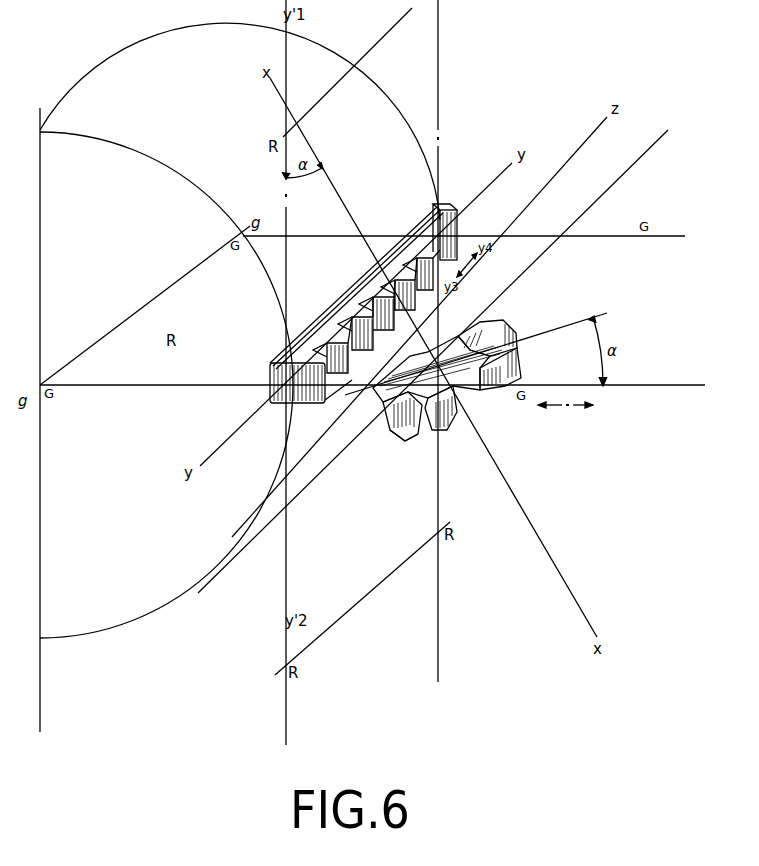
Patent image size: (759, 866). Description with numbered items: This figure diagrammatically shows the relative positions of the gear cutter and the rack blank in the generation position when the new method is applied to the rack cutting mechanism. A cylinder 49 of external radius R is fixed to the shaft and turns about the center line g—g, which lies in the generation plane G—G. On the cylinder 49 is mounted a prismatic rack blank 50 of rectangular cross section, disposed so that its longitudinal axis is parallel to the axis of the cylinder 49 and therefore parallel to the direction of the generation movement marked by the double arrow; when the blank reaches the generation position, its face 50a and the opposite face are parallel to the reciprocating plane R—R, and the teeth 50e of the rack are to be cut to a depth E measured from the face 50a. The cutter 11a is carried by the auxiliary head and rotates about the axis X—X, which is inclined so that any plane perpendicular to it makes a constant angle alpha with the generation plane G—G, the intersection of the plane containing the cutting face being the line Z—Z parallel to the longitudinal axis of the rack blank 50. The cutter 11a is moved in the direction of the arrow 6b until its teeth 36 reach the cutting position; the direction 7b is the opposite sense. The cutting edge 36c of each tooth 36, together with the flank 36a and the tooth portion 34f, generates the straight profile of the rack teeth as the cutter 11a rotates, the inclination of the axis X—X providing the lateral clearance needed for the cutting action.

The cylinder 49 is at (100, 100).
The rack blank 50 is at (270, 394).
The face of rack 50a is at (348, 394).
The rack teeth 50e is at (347, 295).
The gear tooth 34f is at (470, 336).
The teeth 36 is at (445, 430).
The gear tooth flank 36a is at (398, 406).
The cutting edge 36c is at (407, 440).
The cutter 11a is at (449, 406).
The arrow 6b is at (545, 414).
The section line 7b is at (593, 405).